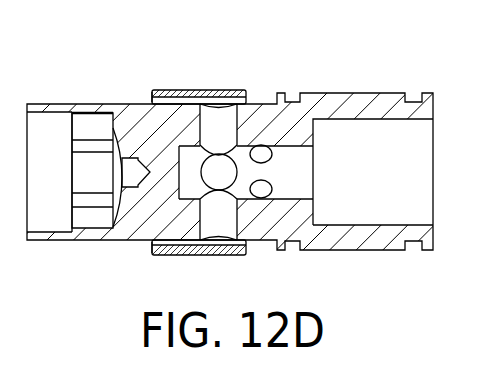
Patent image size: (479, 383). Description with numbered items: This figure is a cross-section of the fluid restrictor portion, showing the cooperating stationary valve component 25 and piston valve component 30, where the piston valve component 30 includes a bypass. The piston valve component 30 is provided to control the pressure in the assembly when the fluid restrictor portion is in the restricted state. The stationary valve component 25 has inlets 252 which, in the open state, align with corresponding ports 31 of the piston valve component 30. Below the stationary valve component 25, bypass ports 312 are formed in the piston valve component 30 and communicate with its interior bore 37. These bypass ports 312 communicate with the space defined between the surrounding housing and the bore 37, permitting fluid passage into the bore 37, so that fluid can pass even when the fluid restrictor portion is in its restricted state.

The stationary valve component 25 is at (212, 91).
The inlet 252 is at (154, 91).
The piston valve component 30 is at (168, 138).
The port 31 is at (230, 137).
The bypass port 312 is at (259, 153).
The interior bore 37 is at (398, 183).